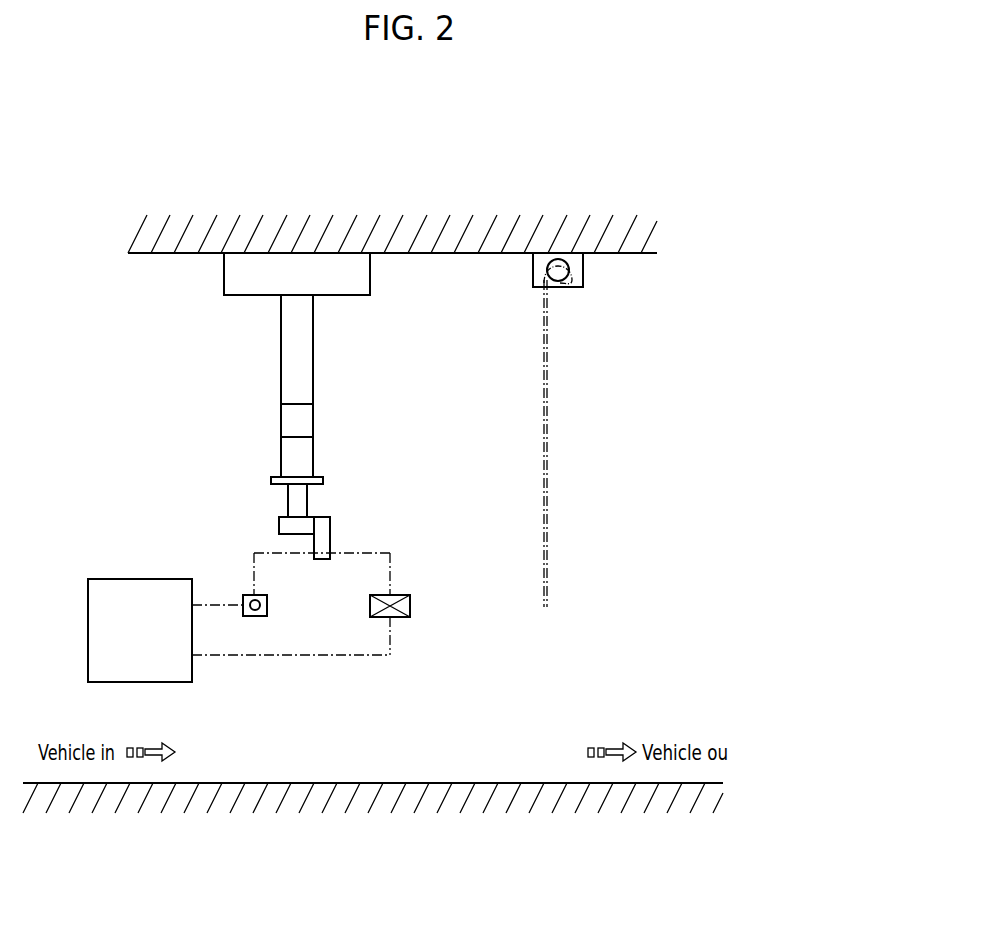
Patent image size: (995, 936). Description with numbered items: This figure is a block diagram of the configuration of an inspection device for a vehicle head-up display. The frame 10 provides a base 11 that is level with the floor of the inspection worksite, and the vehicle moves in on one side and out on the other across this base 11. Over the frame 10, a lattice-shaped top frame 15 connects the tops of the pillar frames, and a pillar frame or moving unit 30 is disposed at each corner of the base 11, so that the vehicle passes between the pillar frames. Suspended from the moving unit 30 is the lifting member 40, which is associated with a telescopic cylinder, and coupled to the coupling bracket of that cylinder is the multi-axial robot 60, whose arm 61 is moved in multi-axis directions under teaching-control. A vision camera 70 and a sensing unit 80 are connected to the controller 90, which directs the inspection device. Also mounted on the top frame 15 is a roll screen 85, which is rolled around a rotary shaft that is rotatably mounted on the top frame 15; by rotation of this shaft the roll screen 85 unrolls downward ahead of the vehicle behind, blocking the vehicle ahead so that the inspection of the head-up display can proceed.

The frame 10 is at (202, 825).
The base 11 is at (420, 783).
The top frame 15 is at (172, 255).
The moving unit 30 is at (248, 296).
The lifting member 40 is at (323, 411).
The multi-axial robot 60 is at (328, 500).
The arm 61 is at (331, 524).
The vision camera 70 is at (243, 600).
The sensing unit 80 is at (410, 606).
The roll screen 85 is at (548, 415).
The controller 90 is at (88, 629).